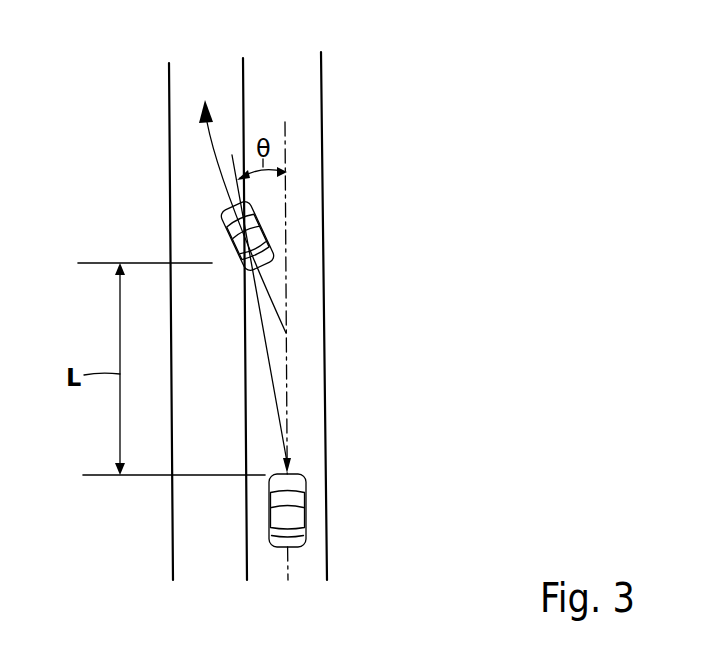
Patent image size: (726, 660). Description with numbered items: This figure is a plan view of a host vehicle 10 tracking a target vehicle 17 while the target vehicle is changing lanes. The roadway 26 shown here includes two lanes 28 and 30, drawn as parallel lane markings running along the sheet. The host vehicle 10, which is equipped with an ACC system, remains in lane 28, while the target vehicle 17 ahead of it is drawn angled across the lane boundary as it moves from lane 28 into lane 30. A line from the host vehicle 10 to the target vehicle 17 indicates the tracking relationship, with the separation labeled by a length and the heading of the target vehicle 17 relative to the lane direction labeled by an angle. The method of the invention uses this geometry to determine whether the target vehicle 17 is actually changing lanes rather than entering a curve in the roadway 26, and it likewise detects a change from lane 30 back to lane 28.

The host vehicle 10 is at (306, 512).
The target vehicle 17 is at (218, 212).
The roadway 26 is at (324, 378).
The lane 28 is at (297, 80).
The lane 30 is at (195, 513).